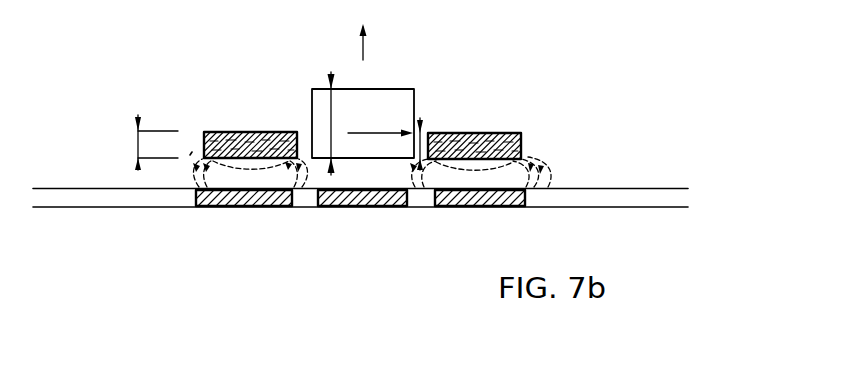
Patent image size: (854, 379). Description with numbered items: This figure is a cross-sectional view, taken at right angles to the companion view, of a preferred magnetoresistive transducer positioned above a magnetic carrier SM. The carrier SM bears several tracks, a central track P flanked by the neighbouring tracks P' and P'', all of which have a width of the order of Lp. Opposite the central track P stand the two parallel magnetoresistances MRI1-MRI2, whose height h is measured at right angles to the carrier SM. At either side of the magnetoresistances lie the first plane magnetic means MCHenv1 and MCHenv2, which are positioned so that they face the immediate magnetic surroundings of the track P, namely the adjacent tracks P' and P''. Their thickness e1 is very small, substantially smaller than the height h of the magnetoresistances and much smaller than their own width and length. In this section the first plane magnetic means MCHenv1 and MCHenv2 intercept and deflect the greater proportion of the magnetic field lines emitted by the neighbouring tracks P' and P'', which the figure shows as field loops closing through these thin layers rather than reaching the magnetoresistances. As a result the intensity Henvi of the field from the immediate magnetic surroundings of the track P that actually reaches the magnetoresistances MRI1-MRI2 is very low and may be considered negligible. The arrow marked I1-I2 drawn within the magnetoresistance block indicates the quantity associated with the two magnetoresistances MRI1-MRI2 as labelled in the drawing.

The carrier SM is at (360, 221).
The track P' is at (244, 219).
The track P is at (362, 219).
The track P'' is at (480, 219).
The first plane magnetic means MCHenv1 is at (233, 132).
The first plane magnetic means MCHenv2 is at (475, 133).
The magnetoresistances MRI1-MRI2 is at (414, 105).
The differential current I1-I2 is at (380, 120).
The height of the magnetoresistances h is at (325, 123).
The intensity of the magnetic field originating from the immediate magnetic surround Henvi is at (392, 38).
The thickness of the first plane magnetic means e1 is at (270, 142).